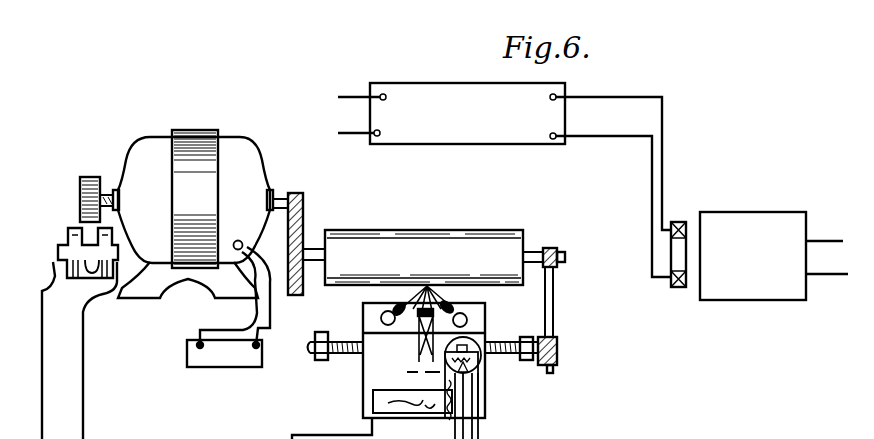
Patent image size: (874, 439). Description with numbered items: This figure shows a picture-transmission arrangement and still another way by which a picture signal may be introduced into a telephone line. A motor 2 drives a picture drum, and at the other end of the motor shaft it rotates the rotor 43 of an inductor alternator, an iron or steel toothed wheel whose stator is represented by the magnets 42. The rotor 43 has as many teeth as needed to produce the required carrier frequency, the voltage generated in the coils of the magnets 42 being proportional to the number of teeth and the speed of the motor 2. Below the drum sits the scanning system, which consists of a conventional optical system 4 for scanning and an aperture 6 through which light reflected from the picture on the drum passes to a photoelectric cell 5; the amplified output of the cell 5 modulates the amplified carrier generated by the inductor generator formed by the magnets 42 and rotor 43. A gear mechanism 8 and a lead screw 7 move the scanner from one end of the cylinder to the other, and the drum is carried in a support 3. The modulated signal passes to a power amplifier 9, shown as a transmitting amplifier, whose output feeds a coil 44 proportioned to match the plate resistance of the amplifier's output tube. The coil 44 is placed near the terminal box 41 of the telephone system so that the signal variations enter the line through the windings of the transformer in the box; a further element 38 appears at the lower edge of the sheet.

The motor 2 is at (235, 156).
The hatched support block / bearing 3 is at (306, 224).
The optical system 4 is at (445, 290).
The photoelectric cell 5 is at (456, 204).
The aperture 6 is at (418, 370).
The lead screw 7 is at (342, 357).
The gear mechanism 8 is at (556, 326).
The power amplifier 9 is at (468, 135).
The connecting element 38 is at (703, 434).
The terminal box 41 is at (767, 293).
The magnets 42 is at (67, 238).
The rotor 43 is at (79, 186).
The coil 44 is at (681, 288).